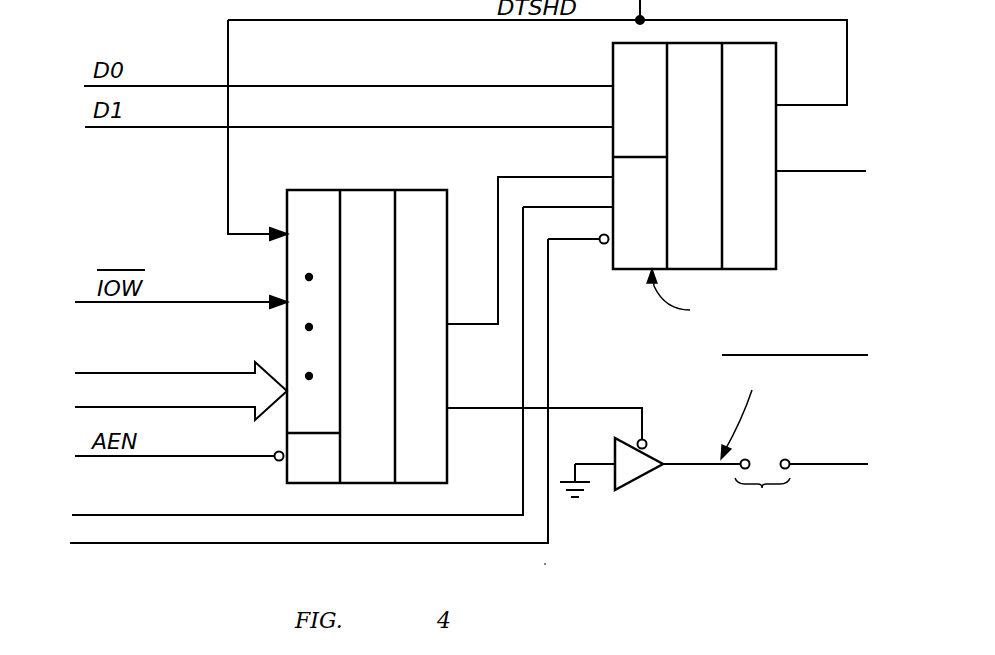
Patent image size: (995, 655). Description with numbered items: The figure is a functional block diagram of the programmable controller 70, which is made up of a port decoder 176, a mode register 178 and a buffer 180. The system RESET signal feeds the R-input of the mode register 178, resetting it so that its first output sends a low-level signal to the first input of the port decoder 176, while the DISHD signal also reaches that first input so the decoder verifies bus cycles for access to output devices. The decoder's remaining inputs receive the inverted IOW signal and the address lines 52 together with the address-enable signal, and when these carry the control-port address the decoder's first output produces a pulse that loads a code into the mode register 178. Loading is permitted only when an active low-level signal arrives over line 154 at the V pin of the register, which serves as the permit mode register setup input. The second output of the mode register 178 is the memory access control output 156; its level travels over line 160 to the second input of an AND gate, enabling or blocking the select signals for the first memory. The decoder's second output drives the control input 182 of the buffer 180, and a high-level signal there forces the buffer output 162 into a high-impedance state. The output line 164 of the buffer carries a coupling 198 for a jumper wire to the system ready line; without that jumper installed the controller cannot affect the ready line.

The address bus 52 is at (165, 373).
The programmable controller 70 is at (550, 566).
The line 154 is at (255, 543).
The memory access control output 156 is at (778, 175).
The line 160 is at (826, 172).
The output of the buffer 162 is at (570, 457).
The output line of the buffer 164 is at (700, 465).
The port decoder 176 is at (318, 190).
The mode register 178 is at (778, 157).
The buffer 180 is at (591, 506).
The control input 182 is at (647, 441).
The coupling 198 is at (774, 496).